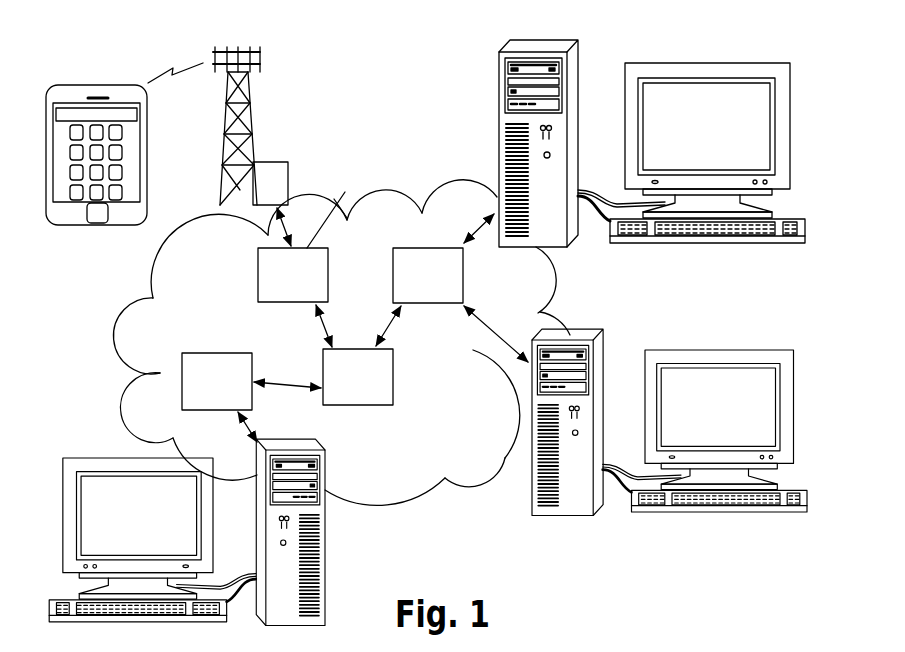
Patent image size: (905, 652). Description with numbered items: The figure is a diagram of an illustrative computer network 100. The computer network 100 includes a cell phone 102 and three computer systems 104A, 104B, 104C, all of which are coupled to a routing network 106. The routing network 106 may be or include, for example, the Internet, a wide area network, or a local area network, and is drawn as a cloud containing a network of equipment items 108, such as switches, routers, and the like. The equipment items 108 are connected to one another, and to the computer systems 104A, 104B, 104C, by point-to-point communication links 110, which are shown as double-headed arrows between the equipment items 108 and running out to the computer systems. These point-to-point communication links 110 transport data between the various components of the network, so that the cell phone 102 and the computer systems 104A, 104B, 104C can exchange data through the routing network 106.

The computer network 100 is at (347, 60).
The cell phone 102 is at (98, 226).
The computer system 104A is at (578, 87).
The computer system 104B is at (603, 373).
The computer system 104C is at (326, 583).
The routing network 106 is at (450, 403).
The equipment item 108 is at (290, 186).
The point-to-point communication link 110 is at (473, 235).